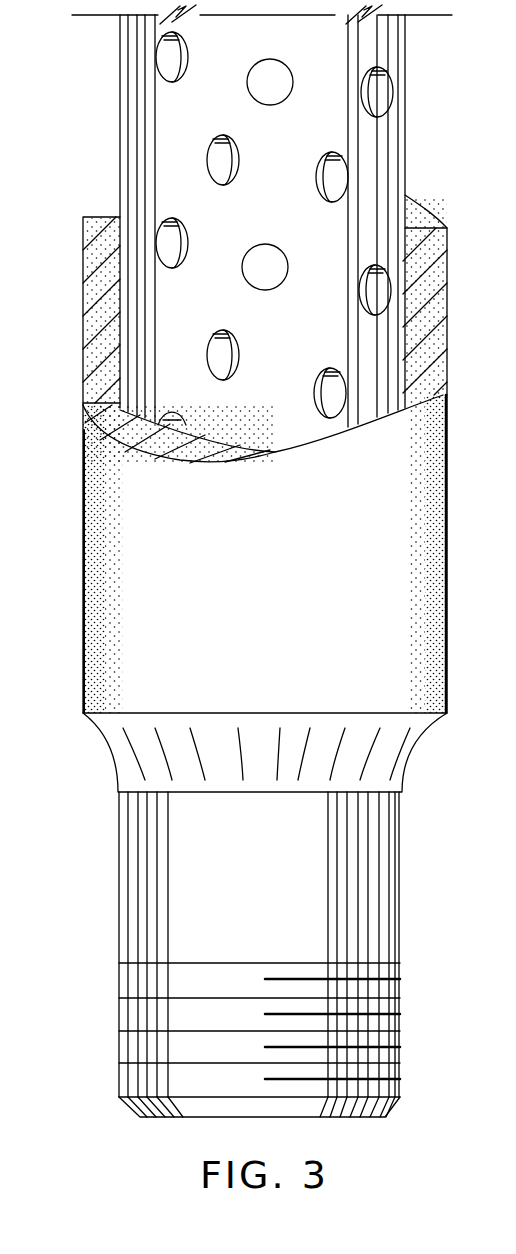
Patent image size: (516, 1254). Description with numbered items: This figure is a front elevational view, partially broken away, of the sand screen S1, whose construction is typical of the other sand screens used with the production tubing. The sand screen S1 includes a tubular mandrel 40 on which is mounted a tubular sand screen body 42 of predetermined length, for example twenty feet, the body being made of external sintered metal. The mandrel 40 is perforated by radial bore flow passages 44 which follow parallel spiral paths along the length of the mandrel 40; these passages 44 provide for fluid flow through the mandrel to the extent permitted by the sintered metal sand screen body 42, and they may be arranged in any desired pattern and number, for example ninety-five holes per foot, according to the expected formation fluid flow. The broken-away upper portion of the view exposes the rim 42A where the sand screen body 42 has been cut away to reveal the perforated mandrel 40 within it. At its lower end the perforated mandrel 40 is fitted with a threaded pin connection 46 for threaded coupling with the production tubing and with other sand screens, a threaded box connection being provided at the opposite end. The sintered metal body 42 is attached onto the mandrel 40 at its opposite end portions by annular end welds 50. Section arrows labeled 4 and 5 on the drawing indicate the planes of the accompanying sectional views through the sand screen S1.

The tubular mandrel 40 is at (121, 137).
The tubular sand screen body 42 is at (384, 525).
The rim of block 42A is at (128, 316).
The radial bore flow passages 44 is at (186, 243).
The threaded pin connection 46 is at (132, 1045).
The annular end welds 50 is at (128, 763).
The sand screen S1 is at (428, 111).
The section line 4- 4 is at (25, 565).
The section line 5 is at (475, 313).